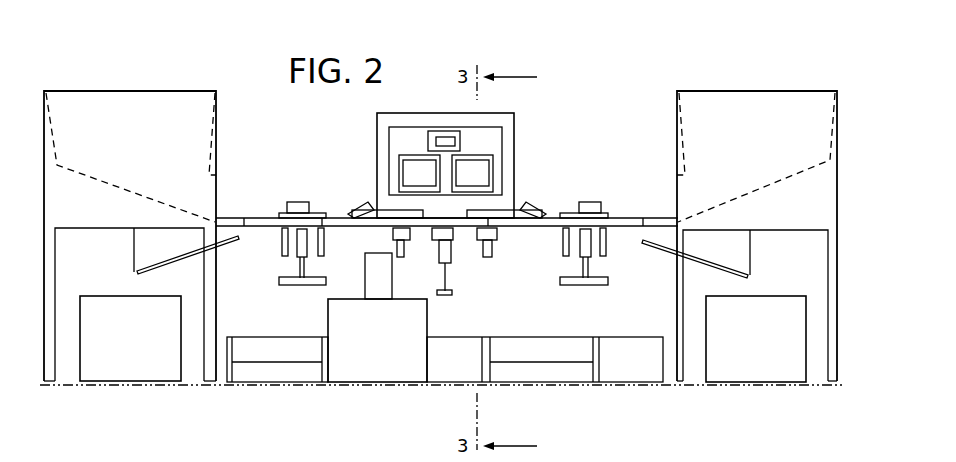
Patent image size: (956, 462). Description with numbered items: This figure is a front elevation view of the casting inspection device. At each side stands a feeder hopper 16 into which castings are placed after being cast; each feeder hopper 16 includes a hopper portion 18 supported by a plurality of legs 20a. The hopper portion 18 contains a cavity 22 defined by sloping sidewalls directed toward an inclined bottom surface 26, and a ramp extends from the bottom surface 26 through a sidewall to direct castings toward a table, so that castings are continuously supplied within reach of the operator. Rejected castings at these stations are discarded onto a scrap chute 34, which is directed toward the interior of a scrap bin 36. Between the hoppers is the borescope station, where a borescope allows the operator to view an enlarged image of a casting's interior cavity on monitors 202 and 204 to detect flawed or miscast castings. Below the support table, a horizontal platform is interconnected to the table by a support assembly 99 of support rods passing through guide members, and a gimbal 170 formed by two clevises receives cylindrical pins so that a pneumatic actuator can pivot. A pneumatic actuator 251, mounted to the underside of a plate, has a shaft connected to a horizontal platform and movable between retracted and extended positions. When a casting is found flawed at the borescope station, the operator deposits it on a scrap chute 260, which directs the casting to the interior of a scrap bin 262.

The feeder hopper 16 is at (127, 80).
The hopper portion 18 is at (62, 134).
The legs 20a is at (50, 383).
The cavity 22 is at (186, 122).
The inclined bottom surface 26 is at (135, 192).
The scrap chute 34 is at (220, 248).
The scrap bin 36 is at (131, 377).
The support assembly 99 is at (306, 296).
The gimbal 170 is at (380, 241).
The monitor 202 is at (410, 165).
The monitor 204 is at (516, 165).
The pneumatic actuator 251 is at (452, 262).
The scrap chute 260 is at (393, 277).
The scrap bin 262 is at (380, 372).